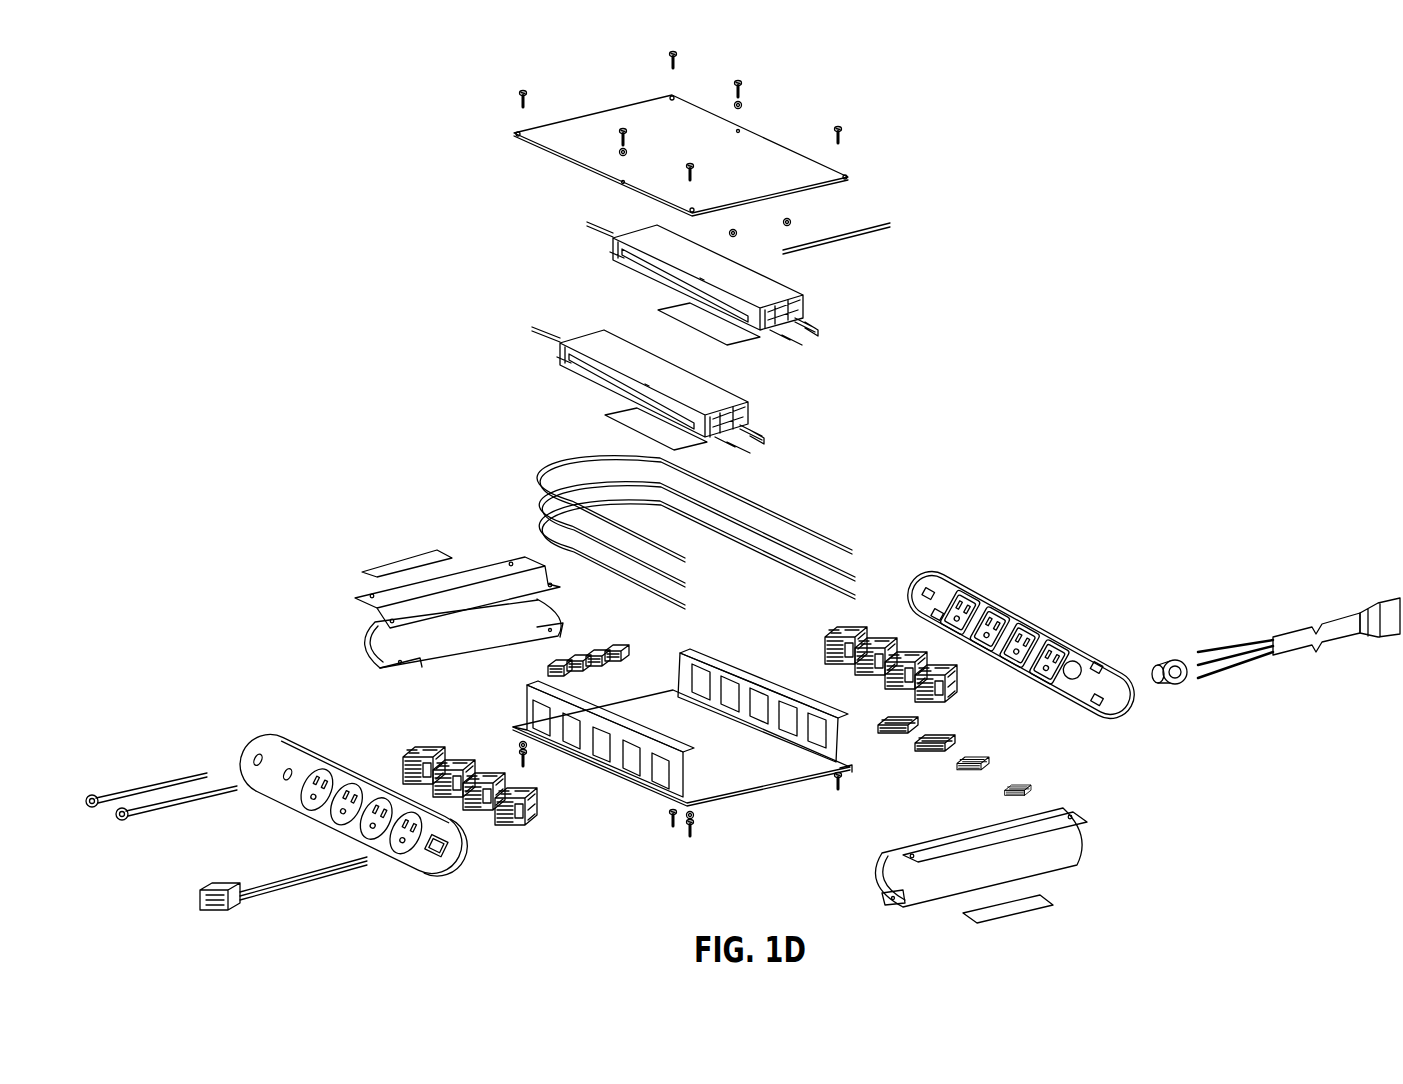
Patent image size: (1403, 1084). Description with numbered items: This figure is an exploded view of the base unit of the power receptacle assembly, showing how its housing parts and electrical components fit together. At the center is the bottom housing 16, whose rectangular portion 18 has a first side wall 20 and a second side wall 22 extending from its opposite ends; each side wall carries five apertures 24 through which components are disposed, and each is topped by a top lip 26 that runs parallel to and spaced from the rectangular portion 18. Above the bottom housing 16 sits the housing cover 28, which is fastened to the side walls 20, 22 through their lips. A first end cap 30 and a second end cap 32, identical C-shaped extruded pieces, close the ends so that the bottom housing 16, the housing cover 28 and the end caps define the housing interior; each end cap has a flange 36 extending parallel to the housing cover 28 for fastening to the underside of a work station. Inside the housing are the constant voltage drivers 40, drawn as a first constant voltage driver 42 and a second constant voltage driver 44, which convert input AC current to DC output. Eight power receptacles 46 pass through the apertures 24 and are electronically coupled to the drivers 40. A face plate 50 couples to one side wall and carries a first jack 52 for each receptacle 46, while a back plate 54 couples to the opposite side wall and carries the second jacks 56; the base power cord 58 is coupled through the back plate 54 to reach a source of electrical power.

The bottom housing 16 is at (671, 744).
The rectangular portion 18 is at (768, 776).
The first side wall 20 is at (528, 712).
The second side wall 22 is at (688, 674).
The apertures 24 is at (730, 690).
The top lip 26 is at (562, 700).
The housing cover 28 is at (638, 112).
The first end cap 30 is at (1050, 858).
The second end cap 32 is at (368, 634).
The flange 36 is at (490, 572).
The constant voltage driver 40 is at (793, 300).
The first constant voltage driver 42 is at (575, 337).
The second constant voltage driver 44 is at (628, 235).
The power receptacles 46 is at (890, 648).
The face plate 50 is at (252, 742).
The first jack 52 is at (990, 620).
The back plate 54 is at (1088, 640).
The second jack 56 is at (122, 823).
The base power cord 58 is at (1342, 635).